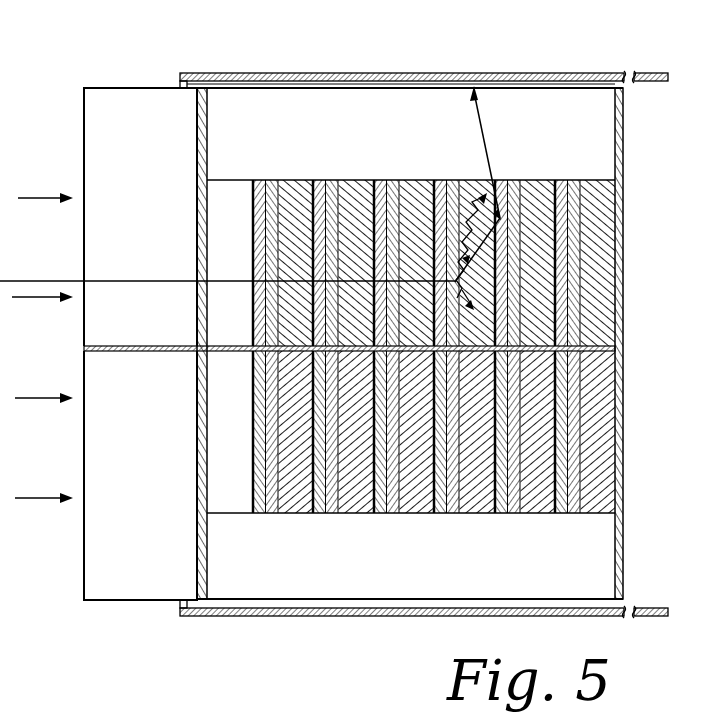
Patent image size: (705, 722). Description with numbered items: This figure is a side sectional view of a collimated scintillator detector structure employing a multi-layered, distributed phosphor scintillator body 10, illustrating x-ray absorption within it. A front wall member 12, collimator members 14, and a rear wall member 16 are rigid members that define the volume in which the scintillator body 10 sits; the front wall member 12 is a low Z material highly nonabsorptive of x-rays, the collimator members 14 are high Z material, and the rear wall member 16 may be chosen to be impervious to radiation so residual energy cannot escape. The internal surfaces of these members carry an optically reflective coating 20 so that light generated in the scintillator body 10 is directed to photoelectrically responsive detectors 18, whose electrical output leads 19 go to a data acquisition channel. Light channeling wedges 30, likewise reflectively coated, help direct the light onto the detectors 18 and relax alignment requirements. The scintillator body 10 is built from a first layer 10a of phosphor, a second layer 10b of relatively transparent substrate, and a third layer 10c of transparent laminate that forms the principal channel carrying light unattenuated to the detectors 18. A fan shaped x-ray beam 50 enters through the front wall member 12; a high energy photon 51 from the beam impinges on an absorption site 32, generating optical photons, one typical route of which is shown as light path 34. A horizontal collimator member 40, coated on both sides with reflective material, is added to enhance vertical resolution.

The scintillator body 10 is at (434, 342).
The first layer 10a is at (275, 514).
The second layer 10b is at (328, 514).
The third layer 10c is at (480, 514).
The front wall member 12 is at (140, 475).
The collimator member 14 is at (153, 231).
The rear wall member 16 is at (623, 372).
The photoelectrically responsive detector 18 is at (410, 73).
The electrical output lead 19 is at (653, 82).
The optically reflective coating 20 is at (204, 478).
The light channeling wedge 30 is at (548, 97).
The absorption site 32 is at (432, 312).
The light path 34 is at (487, 136).
The horizontal collimator member 40 is at (160, 352).
The x-ray beam 50 is at (40, 198).
The high energy photon 51 is at (152, 282).